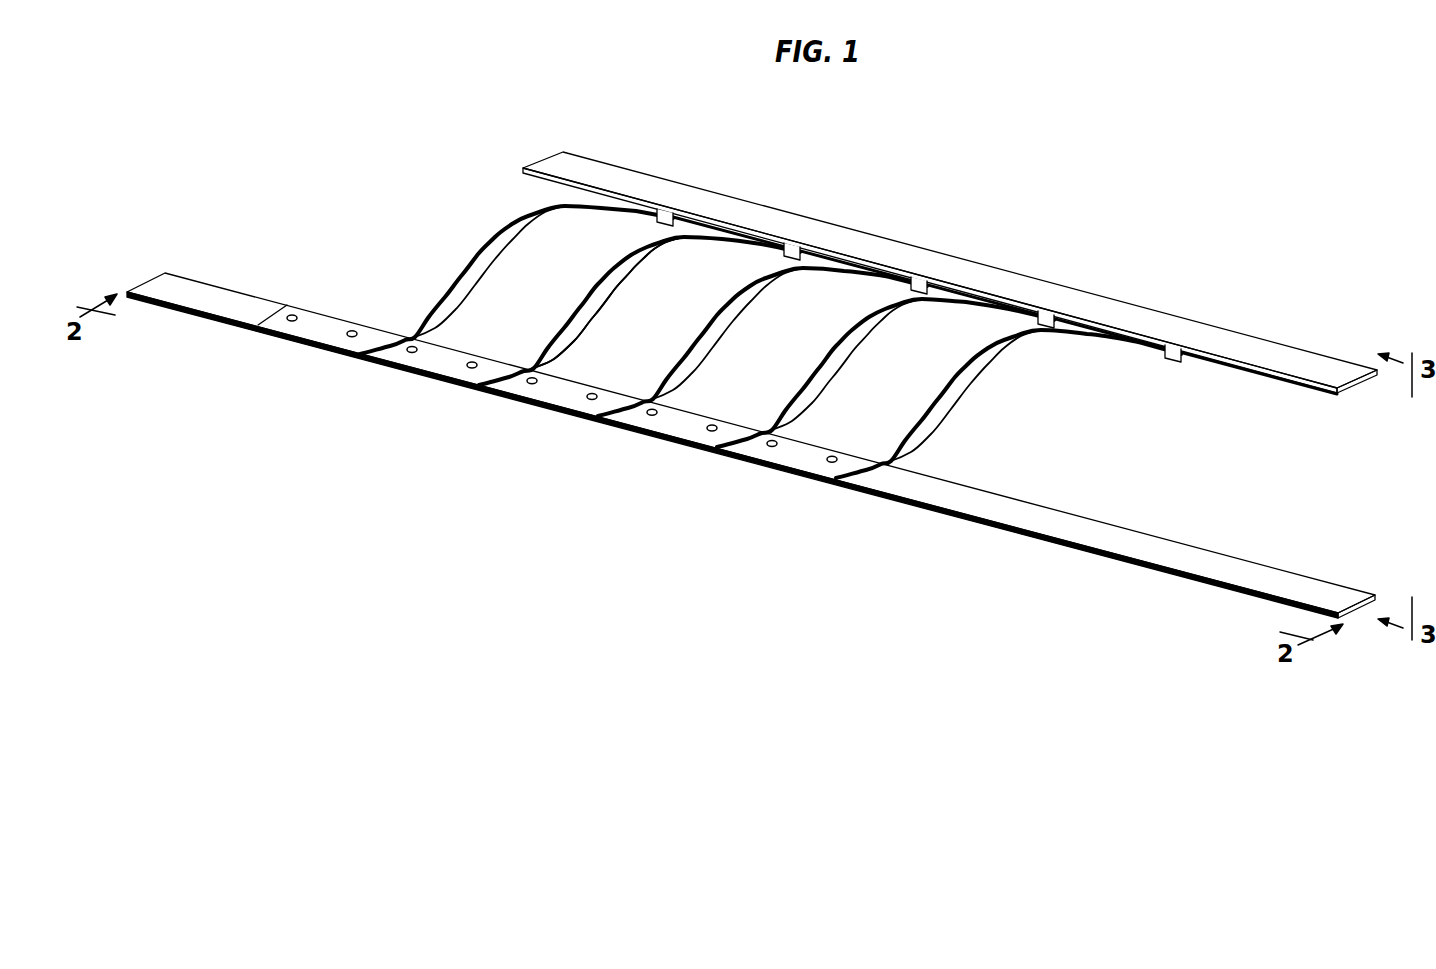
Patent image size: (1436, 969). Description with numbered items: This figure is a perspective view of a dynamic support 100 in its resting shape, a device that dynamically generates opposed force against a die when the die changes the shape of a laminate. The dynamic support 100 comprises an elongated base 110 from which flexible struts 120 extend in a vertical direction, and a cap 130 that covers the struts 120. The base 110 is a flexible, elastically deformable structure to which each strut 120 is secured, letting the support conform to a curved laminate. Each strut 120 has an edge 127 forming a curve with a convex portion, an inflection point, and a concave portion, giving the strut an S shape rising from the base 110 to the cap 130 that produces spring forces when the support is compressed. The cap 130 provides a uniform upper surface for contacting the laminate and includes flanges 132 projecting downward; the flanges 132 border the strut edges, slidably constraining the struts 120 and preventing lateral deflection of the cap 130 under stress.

The dynamic support 100 is at (1077, 162).
The elongated base 110 is at (230, 303).
The flexible struts 120 is at (584, 303).
The edge 127 is at (618, 309).
The cap 130 is at (607, 172).
The flanges 132 is at (779, 254).